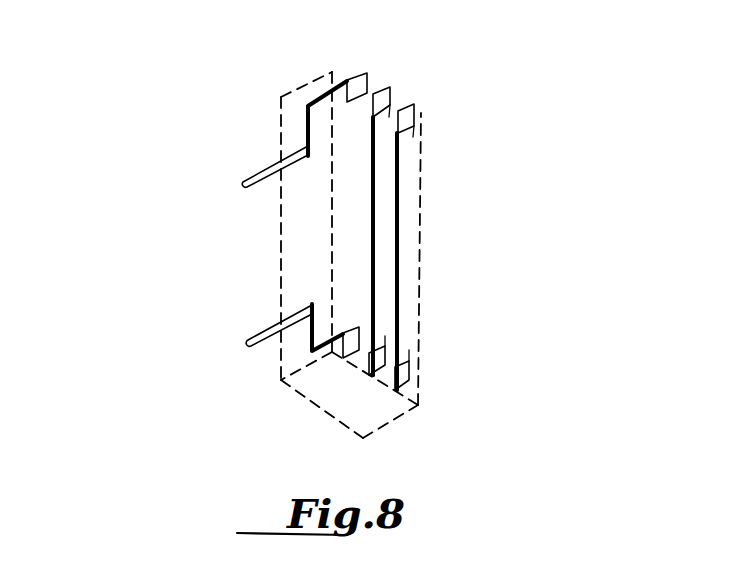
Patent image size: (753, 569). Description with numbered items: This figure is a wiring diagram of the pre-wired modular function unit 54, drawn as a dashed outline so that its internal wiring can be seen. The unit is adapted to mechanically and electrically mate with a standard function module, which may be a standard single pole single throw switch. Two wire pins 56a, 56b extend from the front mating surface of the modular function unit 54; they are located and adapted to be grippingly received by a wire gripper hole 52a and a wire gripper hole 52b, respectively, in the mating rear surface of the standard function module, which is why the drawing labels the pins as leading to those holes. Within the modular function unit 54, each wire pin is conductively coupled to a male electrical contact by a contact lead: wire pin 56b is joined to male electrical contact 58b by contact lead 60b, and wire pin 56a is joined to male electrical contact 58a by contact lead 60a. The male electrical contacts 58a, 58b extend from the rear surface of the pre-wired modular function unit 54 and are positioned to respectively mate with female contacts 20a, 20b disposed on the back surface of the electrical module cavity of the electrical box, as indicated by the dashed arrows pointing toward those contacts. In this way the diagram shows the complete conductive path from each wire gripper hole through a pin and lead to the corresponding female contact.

The pre-wired modular function unit 54 is at (345, 32).
The contact lead 60b is at (307, 120).
The wire pin 56b is at (263, 182).
The male electrical contact 58b is at (389, 88).
The male electrical contact 58a is at (352, 355).
The contact lead 60a is at (315, 357).
The wire pin 56a is at (265, 345).
The wire gripper hole 52b is at (243, 183).
The wire gripper hole 52a is at (243, 342).
The female contact 20b is at (420, 117).
The female contact 20a is at (410, 373).